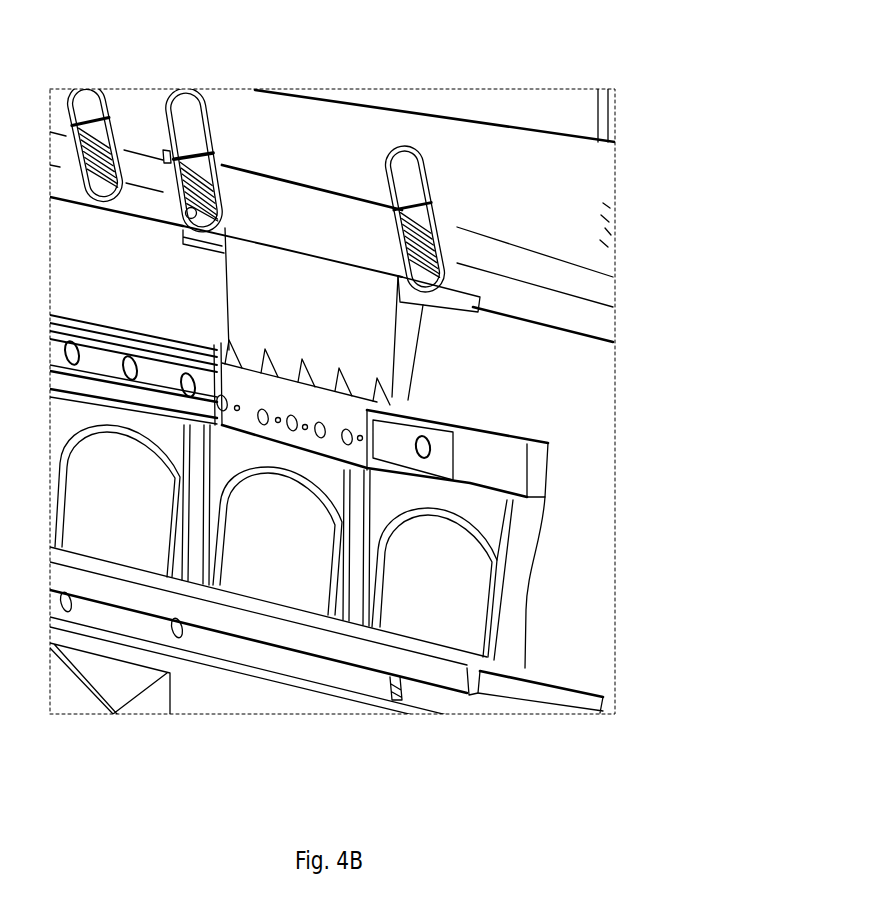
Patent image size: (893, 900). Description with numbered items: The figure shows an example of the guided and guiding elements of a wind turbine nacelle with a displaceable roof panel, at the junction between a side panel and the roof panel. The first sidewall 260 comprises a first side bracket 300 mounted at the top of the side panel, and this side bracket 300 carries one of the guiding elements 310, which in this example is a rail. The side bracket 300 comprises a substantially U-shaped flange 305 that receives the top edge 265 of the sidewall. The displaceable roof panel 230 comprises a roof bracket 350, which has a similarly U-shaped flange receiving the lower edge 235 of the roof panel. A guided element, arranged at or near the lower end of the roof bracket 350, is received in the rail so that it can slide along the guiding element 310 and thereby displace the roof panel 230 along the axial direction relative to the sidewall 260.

The displaceable roof panel 230 is at (579, 175).
The lower edge of the roof panel 235 is at (590, 345).
The roof bracket 350 is at (326, 215).
The first side bracket 300 is at (520, 603).
The guiding element 310 is at (442, 453).
The top edge of a sidewall 265 is at (598, 700).
The U-shaped flange 305 is at (455, 690).
The first sidewall 260 is at (203, 686).